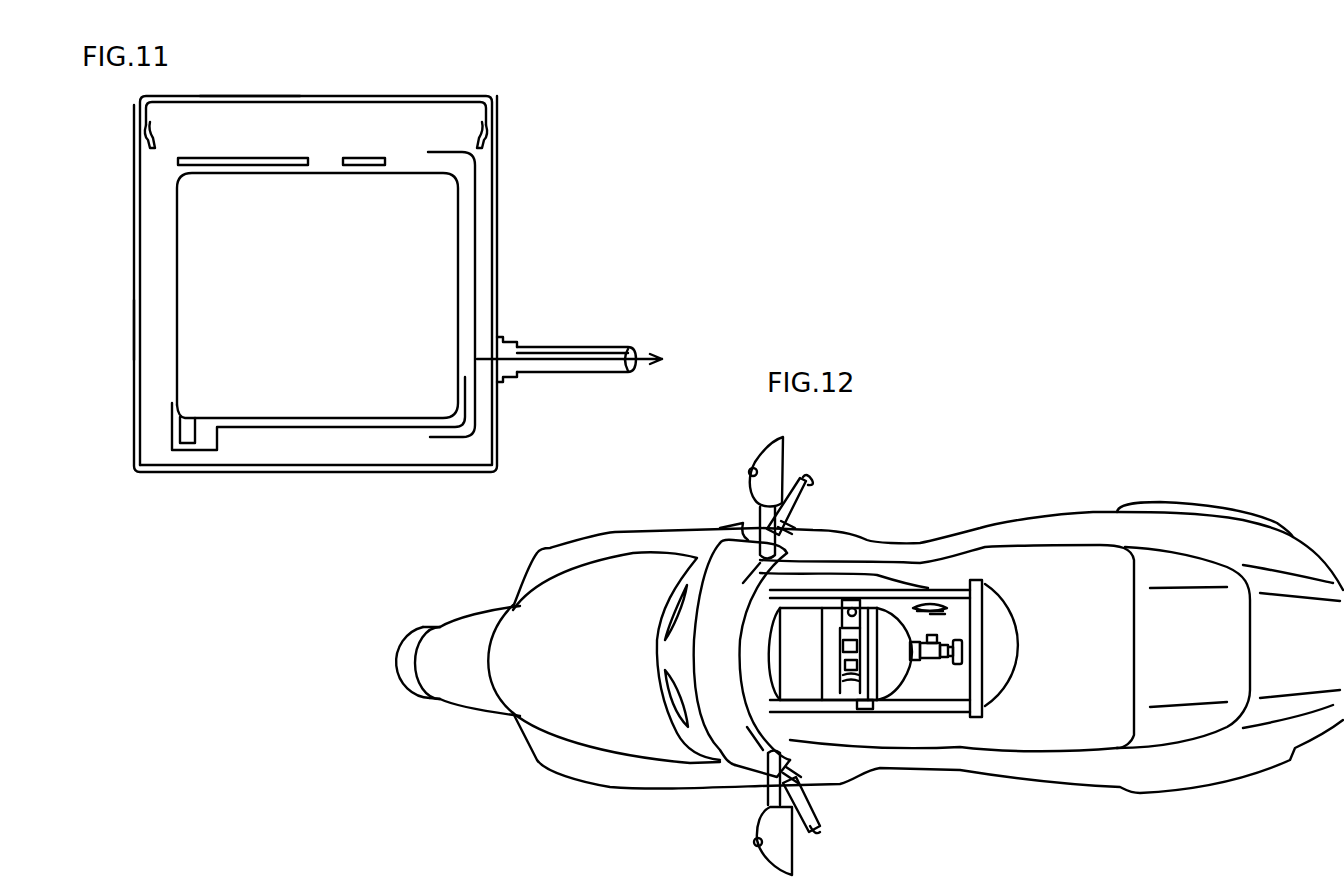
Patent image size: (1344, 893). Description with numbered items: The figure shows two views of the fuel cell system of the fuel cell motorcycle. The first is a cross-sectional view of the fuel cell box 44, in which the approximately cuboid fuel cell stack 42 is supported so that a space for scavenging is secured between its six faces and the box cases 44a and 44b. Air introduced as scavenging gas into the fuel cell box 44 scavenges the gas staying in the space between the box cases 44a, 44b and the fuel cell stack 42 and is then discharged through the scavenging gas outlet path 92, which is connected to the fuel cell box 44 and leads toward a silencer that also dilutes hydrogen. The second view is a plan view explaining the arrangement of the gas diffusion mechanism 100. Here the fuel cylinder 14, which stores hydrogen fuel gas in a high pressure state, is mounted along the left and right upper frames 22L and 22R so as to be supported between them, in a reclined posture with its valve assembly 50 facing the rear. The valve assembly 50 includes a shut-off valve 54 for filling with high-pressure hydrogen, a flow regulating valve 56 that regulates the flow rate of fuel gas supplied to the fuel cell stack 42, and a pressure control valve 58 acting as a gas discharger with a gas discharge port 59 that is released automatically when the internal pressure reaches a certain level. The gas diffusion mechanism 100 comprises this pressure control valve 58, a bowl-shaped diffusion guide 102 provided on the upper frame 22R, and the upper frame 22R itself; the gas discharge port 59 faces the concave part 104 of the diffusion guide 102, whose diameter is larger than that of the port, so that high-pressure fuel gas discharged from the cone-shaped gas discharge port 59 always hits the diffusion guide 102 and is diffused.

In FIG. 12, the fuel cylinder 14 is at (803, 623).
In FIG. 12, the right upper frame 22R is at (867, 595).
In FIG. 12, the left upper frame 22L is at (887, 712).
In FIG. 11, the fuel cell stack 42 is at (320, 403).
In FIG. 11, the fuel cell box 44 is at (503, 226).
In FIG. 11, the box case 44a is at (134, 328).
In FIG. 11, the box case 44b is at (222, 95).
In FIG. 12, the valve assembly 50 is at (938, 672).
In FIG. 12, the shut-off valve 54 is at (957, 662).
In FIG. 12, the flow regulating valve 56 is at (963, 666).
In FIG. 12, the pressure control valve 58 is at (962, 649).
In FIG. 12, the gas discharge port 59 is at (936, 637).
In FIG. 11, the scavenging gas outlet path 92 is at (565, 372).
In FIG. 12, the gas diffusion mechanism 100 is at (940, 583).
In FIG. 12, the diffusion guide 102 is at (938, 603).
In FIG. 12, the concave part 104 is at (937, 618).